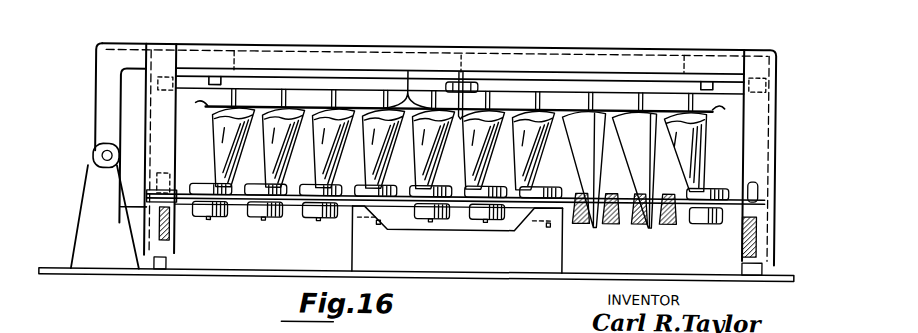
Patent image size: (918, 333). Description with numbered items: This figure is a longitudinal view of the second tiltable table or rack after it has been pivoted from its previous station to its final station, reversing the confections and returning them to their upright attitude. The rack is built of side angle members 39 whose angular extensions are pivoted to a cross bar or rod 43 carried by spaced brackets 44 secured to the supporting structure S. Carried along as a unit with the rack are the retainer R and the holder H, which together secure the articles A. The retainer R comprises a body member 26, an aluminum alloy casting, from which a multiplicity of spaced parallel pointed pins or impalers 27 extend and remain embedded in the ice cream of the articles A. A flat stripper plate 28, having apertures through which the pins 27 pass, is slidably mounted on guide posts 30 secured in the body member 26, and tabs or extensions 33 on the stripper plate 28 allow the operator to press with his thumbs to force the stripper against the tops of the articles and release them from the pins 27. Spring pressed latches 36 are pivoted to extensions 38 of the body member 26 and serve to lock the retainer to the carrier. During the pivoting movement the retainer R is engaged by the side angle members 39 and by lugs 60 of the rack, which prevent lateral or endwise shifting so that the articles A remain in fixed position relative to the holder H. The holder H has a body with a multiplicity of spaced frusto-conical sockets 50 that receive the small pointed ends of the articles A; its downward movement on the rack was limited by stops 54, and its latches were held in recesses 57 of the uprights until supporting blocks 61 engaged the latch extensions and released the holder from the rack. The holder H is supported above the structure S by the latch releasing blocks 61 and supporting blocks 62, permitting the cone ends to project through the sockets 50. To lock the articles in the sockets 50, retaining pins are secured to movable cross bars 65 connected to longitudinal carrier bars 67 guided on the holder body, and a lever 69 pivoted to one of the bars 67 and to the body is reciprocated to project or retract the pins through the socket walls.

The body member 26 is at (608, 90).
The pointed pins or impalers 27 is at (407, 72).
The stripper plate 28 is at (307, 111).
The guide posts 30 is at (263, 110).
The tabs or extensions 33 is at (460, 119).
The spring pressed latches 36 is at (458, 118).
The extensions of the body member 38 is at (467, 83).
The side angle members 39 is at (520, 54).
The cross bar or rod 43 is at (100, 160).
The brackets 44 is at (83, 207).
The sockets 50 is at (600, 221).
The stops 54 is at (150, 186).
The recesses 57 is at (743, 252).
The lugs 60 is at (213, 79).
The supporting blocks 61 is at (763, 268).
The supporting blocks 62 is at (515, 271).
The movable cross bars 65 is at (517, 221).
The longitudinal carrier bars 67 is at (395, 229).
The lever 69 is at (128, 229).
The retainer R is at (355, 84).
The articles A is at (653, 175).
The supporting structure S is at (137, 281).
The holder H is at (273, 222).